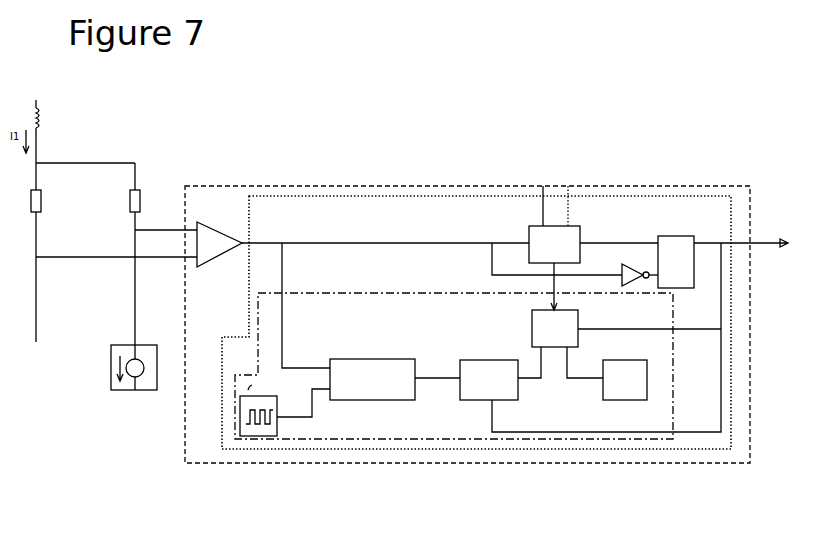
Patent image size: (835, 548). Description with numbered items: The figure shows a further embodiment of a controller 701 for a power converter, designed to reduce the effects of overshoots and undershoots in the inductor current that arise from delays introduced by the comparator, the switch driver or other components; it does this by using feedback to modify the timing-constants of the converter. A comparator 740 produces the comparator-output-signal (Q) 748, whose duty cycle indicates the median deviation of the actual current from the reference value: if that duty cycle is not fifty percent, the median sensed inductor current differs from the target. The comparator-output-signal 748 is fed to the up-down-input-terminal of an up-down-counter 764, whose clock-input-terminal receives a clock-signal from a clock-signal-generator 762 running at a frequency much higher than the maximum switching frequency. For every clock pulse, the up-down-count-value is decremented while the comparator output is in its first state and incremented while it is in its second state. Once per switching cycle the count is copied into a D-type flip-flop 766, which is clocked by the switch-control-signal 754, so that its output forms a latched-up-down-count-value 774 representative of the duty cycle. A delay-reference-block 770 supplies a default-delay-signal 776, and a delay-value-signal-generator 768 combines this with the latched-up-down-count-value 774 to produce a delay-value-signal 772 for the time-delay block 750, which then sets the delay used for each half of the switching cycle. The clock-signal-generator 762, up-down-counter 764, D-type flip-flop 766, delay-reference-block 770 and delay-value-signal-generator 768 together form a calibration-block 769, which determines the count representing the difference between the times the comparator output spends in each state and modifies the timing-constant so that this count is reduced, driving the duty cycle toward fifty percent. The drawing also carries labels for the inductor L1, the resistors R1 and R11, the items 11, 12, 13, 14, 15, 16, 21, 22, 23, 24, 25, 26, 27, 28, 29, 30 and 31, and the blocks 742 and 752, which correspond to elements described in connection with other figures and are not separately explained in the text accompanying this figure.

The comparator inverting input line 11 is at (59, 257).
The sense node line 12 is at (59, 163).
The comparator non-inverting input line 13 is at (160, 229).
The reference current source 14 is at (157, 351).
The comparator 15 is at (209, 224).
The comparator output line 16 is at (375, 243).
The up/down counter 21 is at (382, 359).
The counter output line 22 is at (424, 378).
The D flip-flop 23 is at (461, 360).
The flip-flop output line 24 is at (542, 372).
The reference input line 25 is at (570, 372).
The adder/subtractor 26 is at (578, 320).
The timer to adder line 27 is at (555, 292).
The timer 28 is at (580, 224).
The Vin input 29 is at (542, 194).
The Vout input 30 is at (568, 194).
The timer output line 31 is at (601, 243).
The controller 701 is at (290, 186).
The comparator 740 is at (222, 232).
The control logic block 742 is at (375, 196).
The comparator-output-signal (Q) 748 is at (322, 243).
The timer 750 is at (580, 243).
The output flip-flop 752 is at (634, 243).
The switch-control-signal 754 is at (773, 243).
The clock-signal-generator 762 is at (258, 436).
The up-down-counter 764 is at (365, 400).
The D-type flip-flop 766 is at (468, 400).
The delay-value-signal-generator 768 is at (580, 345).
The calibration-block 769 is at (400, 447).
The delay-reference-block 770 is at (620, 400).
The delay-value-signal 772 is at (556, 291).
The latched-up-down-count-value 774 is at (531, 378).
The default-delay-signal 776 is at (578, 378).
The inductor L1 is at (40, 110).
The resistor R1 is at (40, 190).
The sense resistor R11 is at (130, 206).